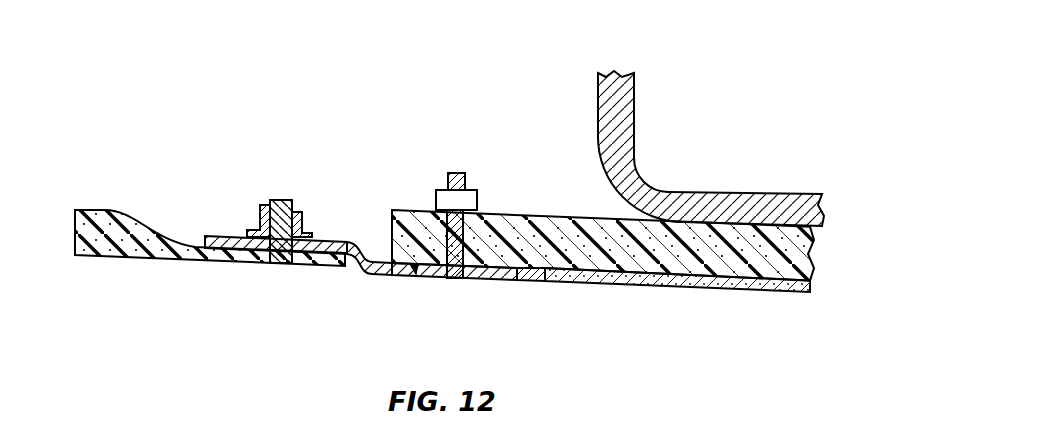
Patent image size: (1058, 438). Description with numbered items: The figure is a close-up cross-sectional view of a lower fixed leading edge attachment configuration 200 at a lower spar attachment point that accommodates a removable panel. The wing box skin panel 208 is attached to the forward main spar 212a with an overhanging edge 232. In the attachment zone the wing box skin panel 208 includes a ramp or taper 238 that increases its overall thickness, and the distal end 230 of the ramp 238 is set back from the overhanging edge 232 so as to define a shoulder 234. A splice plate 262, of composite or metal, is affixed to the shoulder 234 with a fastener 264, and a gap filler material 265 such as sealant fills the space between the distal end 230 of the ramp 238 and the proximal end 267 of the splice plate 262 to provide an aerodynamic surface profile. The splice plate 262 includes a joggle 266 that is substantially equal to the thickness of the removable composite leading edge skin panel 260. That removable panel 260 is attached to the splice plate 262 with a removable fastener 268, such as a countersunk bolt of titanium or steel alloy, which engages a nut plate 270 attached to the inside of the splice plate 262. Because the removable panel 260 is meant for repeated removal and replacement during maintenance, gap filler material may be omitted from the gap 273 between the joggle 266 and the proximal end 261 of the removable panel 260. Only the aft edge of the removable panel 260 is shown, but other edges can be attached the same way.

The assembly 200 is at (207, 66).
The wing box skin panel 208 is at (572, 280).
The forward main spar 212a is at (615, 128).
The distal end of the ramp 230 is at (566, 280).
The overhanging edge 232 is at (393, 232).
The shoulder 234 is at (418, 278).
The ramp 238 is at (637, 289).
The removable composite leading edge skin panel 260 is at (146, 258).
The proximal end of the removable panel 261 is at (332, 272).
The splice plate 262 is at (223, 236).
The fastener 264 is at (456, 172).
The gap filler material 265 is at (524, 283).
The joggle 266 is at (400, 278).
The proximal end of the splice plate 267 is at (500, 282).
The removable fastener 268 is at (279, 200).
The nut plate 270 is at (300, 224).
The gap 273 is at (360, 285).